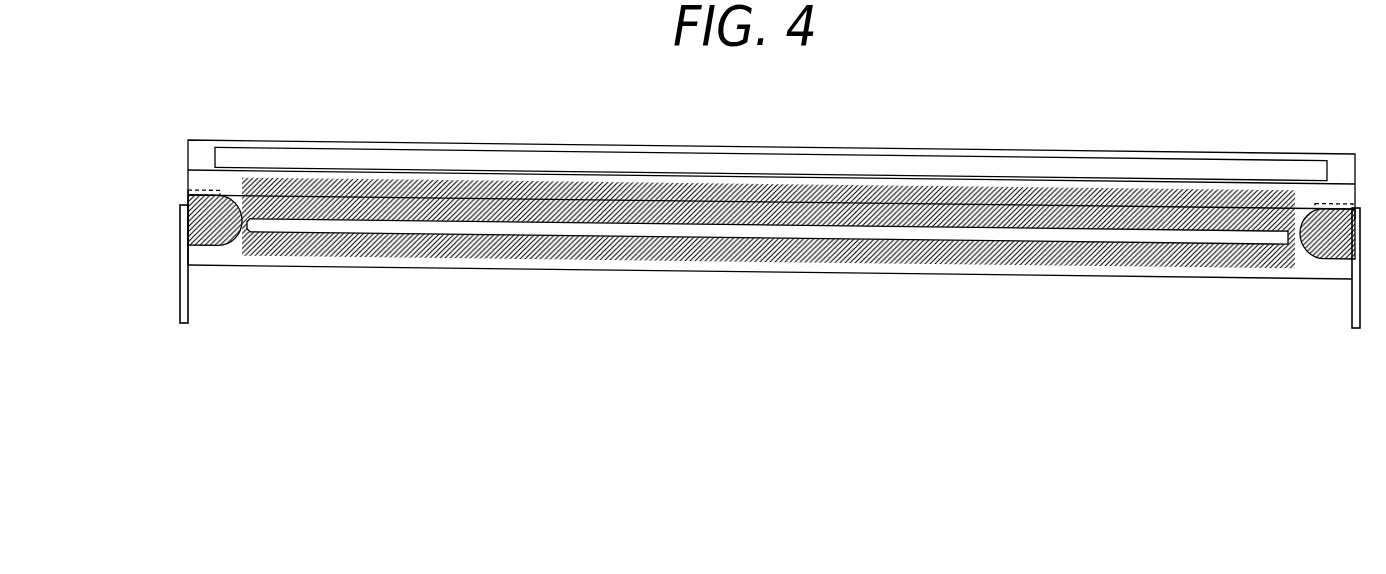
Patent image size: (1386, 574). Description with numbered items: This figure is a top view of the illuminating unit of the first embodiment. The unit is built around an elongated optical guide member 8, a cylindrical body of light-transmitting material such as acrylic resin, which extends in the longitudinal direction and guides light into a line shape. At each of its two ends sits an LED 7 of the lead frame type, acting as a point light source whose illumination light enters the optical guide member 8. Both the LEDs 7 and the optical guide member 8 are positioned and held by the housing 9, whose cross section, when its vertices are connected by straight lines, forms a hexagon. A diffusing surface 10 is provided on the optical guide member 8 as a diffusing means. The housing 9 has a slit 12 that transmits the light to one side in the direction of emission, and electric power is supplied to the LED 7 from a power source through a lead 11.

The LED 7 is at (225, 193).
The optical guide member 8 is at (958, 188).
The housing 9 is at (198, 152).
The diffusing surface 10 is at (740, 230).
The lead 11 is at (188, 310).
The slit 12 is at (568, 158).